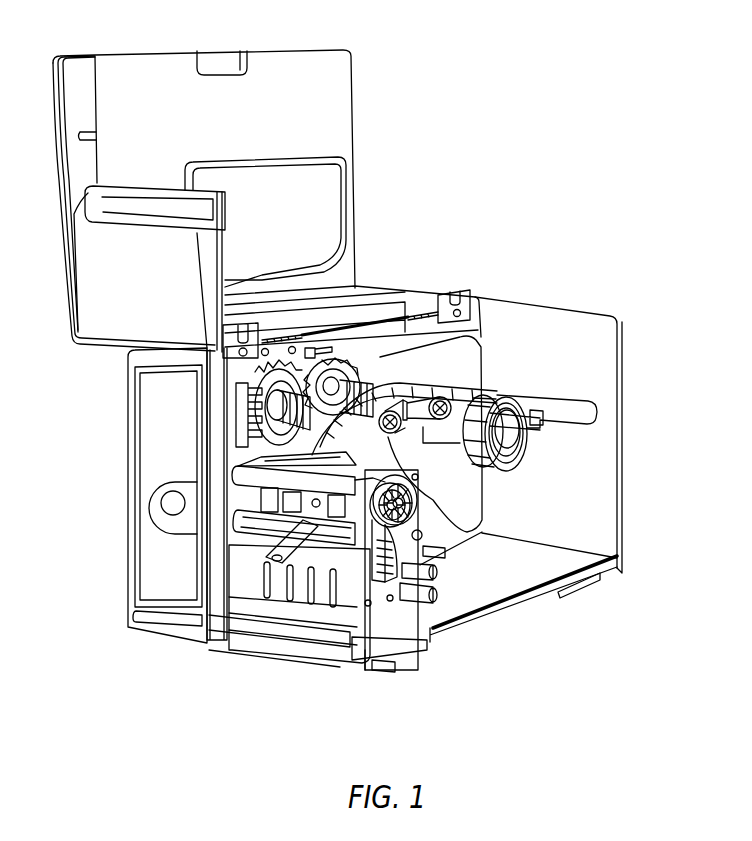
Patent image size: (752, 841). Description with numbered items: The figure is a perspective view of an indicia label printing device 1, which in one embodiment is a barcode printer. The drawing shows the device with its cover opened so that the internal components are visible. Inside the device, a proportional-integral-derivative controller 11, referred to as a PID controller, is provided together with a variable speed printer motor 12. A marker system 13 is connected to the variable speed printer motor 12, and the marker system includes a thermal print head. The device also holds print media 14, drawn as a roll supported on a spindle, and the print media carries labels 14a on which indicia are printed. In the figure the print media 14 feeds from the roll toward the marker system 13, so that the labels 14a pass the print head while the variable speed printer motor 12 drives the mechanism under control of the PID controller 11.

The indicia label printing device 1 is at (358, 359).
The proportional-integral-derivative controller 11 is at (461, 571).
The variable speed printer motor 12 is at (400, 547).
The marker system 13 is at (303, 527).
The print media 14 is at (503, 467).
The labels 14a is at (270, 555).